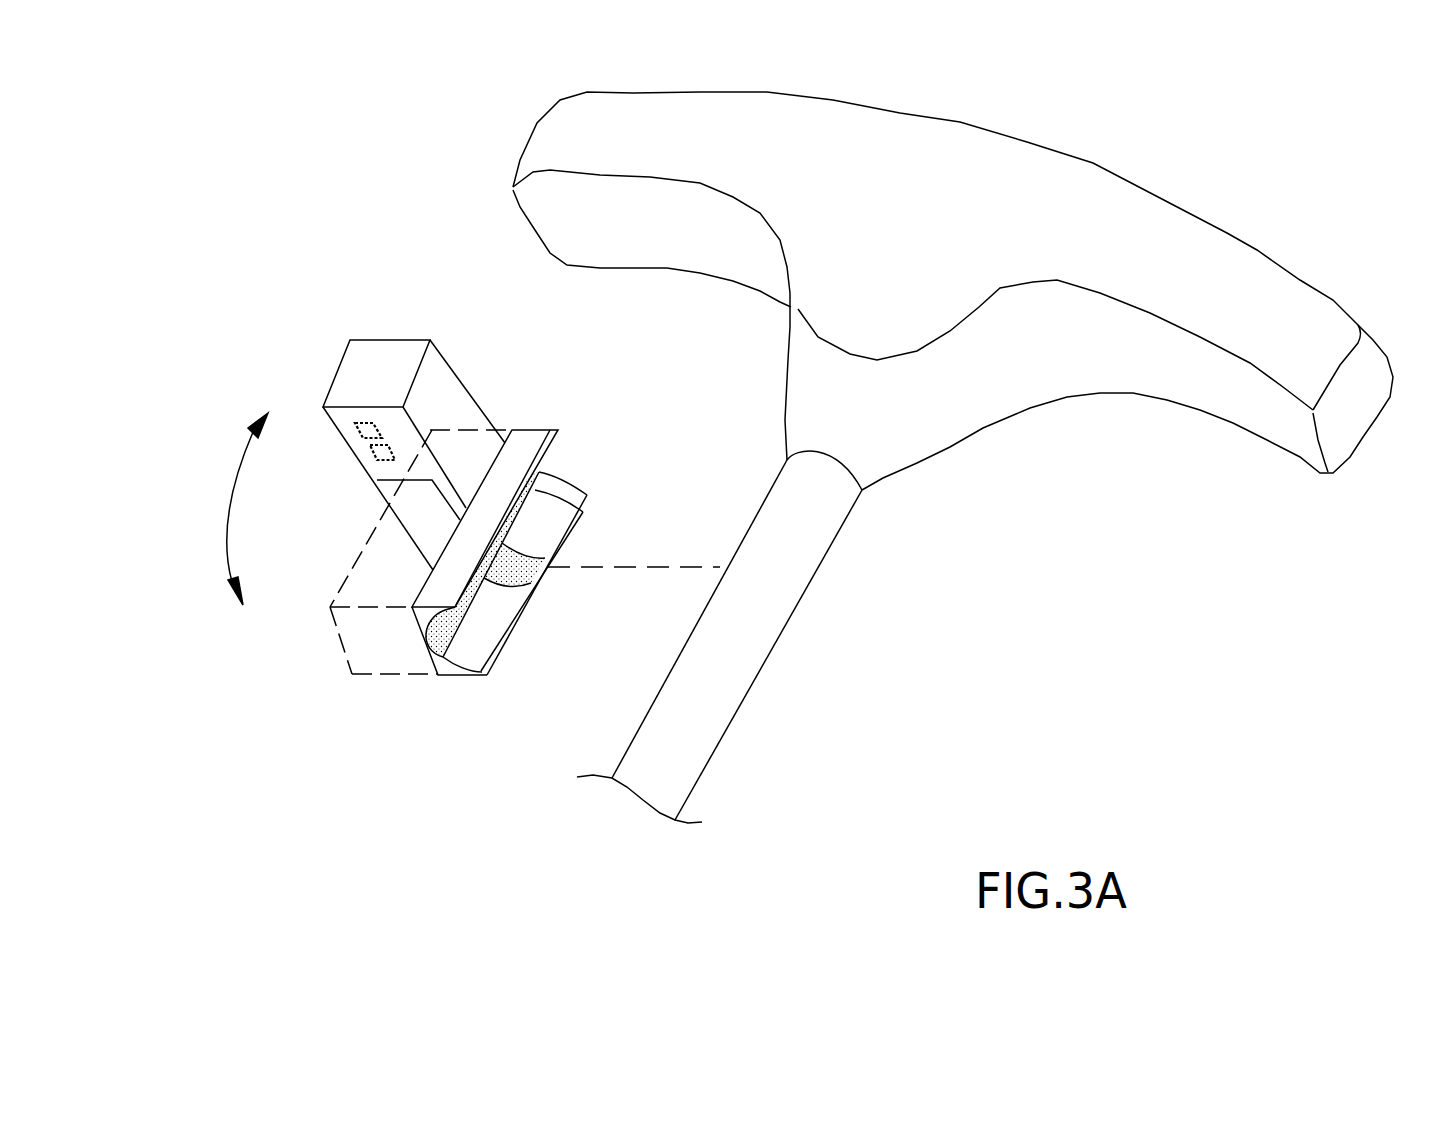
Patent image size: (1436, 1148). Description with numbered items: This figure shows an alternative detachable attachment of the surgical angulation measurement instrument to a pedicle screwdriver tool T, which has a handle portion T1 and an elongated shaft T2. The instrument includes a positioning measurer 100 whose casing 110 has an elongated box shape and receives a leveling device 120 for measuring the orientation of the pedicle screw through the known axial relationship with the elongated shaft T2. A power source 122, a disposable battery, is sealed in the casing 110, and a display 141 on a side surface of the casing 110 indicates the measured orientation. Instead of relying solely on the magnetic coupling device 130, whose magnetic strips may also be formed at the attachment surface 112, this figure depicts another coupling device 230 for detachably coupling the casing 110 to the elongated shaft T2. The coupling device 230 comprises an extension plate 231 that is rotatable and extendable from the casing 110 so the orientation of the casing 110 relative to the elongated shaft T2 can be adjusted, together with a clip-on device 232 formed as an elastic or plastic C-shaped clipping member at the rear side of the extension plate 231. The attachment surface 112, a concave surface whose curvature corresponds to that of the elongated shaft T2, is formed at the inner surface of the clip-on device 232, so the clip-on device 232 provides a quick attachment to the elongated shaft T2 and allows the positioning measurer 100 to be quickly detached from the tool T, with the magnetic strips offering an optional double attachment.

The positioning measurer 100 is at (438, 183).
The casing 110 is at (443, 405).
The attachment surface 112 is at (523, 572).
The leveling device 120 is at (382, 458).
The power source 122 is at (371, 436).
The coupling device 130 is at (585, 513).
The display 141 is at (417, 507).
The coupling device 230 is at (532, 840).
The extension plate 231 is at (422, 617).
The clip-on device 232 is at (476, 641).
The tool T is at (968, 603).
The handle portion T1 is at (960, 367).
The elongated shaft T2 is at (743, 653).